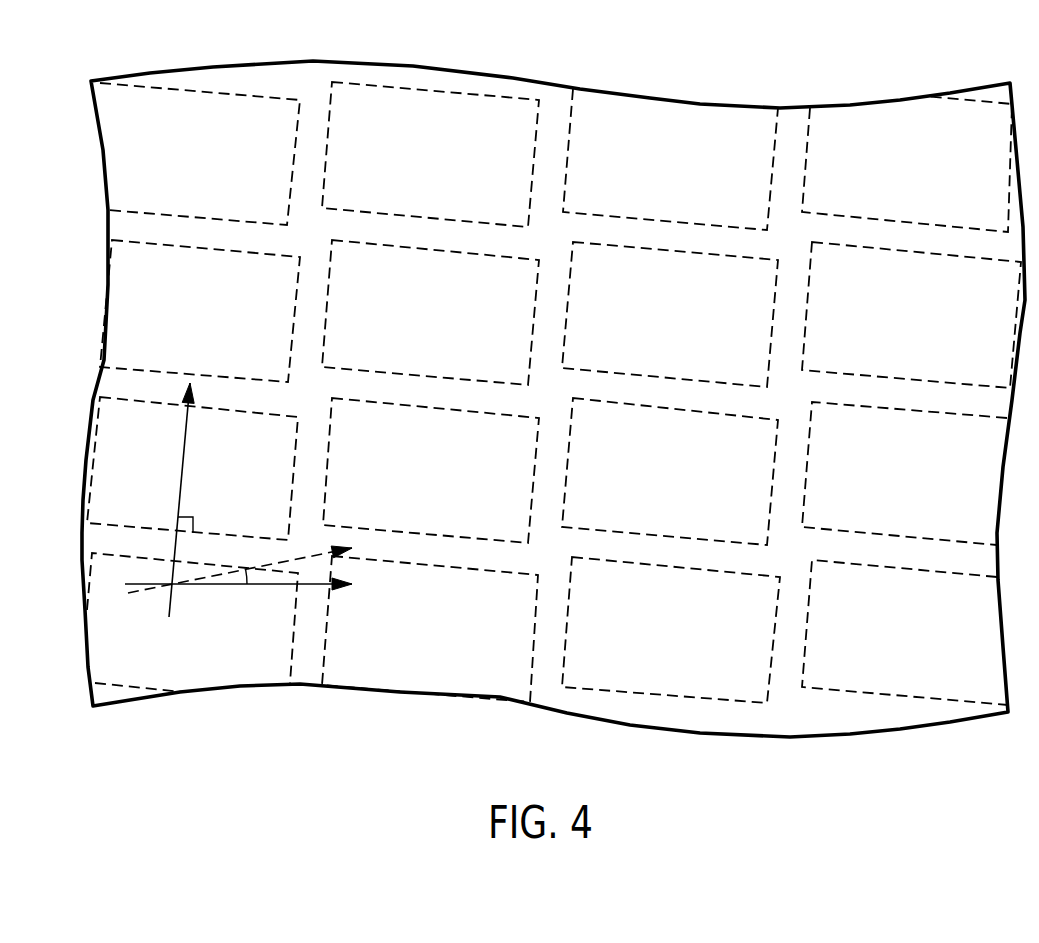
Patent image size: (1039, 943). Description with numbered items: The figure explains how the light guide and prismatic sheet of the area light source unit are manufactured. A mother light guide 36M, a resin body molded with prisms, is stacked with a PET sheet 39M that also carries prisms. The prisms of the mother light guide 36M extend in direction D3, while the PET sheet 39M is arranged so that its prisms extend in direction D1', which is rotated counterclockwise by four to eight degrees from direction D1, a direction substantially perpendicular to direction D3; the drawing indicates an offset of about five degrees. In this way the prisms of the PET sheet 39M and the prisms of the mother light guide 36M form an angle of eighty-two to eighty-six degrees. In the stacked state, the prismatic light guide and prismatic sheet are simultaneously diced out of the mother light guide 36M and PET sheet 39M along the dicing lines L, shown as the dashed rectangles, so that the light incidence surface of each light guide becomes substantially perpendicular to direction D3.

The mother light guide 36M is at (553, 430).
The PET sheet 39M is at (777, 723).
The dicing line L is at (528, 690).
The direction D1 is at (254, 582).
The direction D1' is at (258, 562).
The direction D3 is at (186, 483).